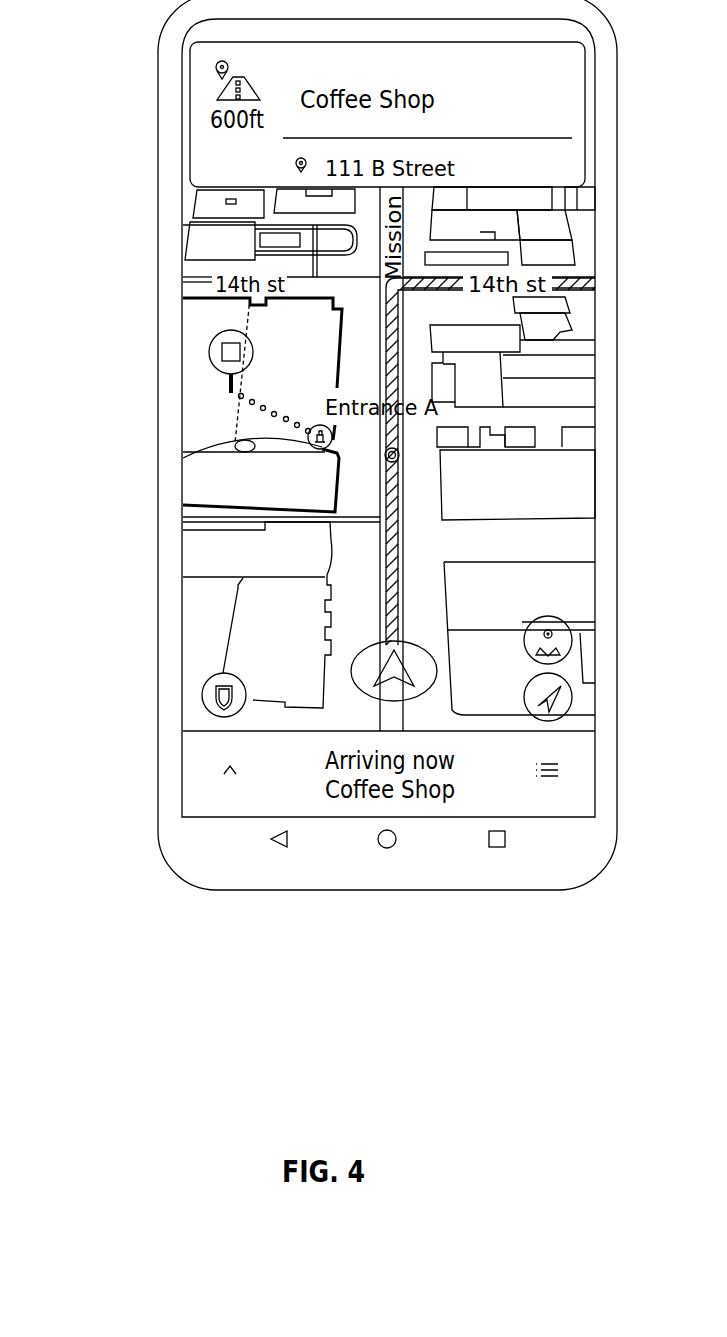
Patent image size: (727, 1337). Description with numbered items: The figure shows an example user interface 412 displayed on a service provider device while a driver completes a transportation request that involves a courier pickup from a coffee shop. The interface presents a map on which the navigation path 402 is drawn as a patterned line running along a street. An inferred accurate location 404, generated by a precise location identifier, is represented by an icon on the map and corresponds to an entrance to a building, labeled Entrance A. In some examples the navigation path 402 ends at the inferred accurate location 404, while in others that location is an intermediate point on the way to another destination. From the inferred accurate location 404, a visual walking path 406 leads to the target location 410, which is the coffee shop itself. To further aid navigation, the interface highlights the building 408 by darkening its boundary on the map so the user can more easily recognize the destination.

The navigation path 402 is at (390, 604).
The inferred accurate location 404 is at (236, 443).
The visual walking path 406 is at (242, 393).
The building 408 is at (325, 487).
The target location 410 is at (209, 351).
The user interface 412 is at (160, 97).